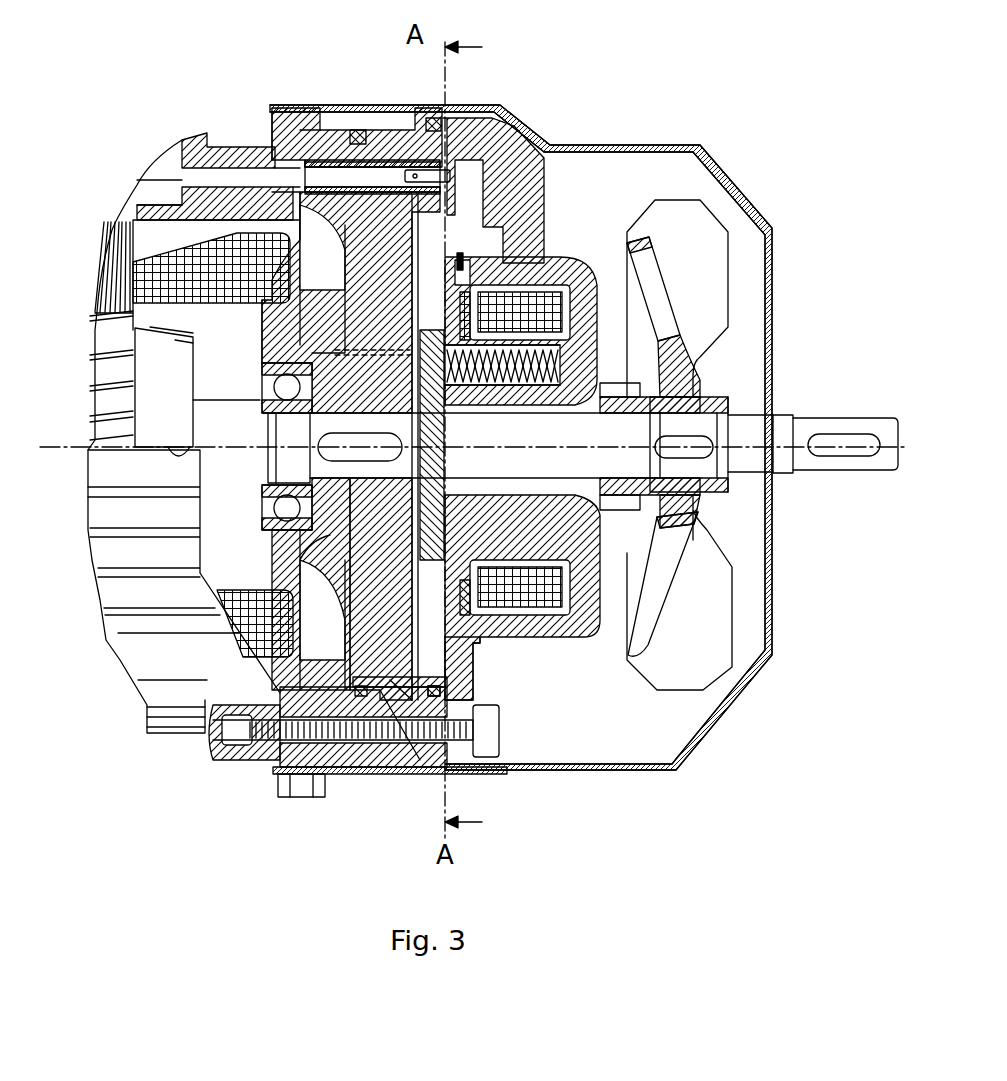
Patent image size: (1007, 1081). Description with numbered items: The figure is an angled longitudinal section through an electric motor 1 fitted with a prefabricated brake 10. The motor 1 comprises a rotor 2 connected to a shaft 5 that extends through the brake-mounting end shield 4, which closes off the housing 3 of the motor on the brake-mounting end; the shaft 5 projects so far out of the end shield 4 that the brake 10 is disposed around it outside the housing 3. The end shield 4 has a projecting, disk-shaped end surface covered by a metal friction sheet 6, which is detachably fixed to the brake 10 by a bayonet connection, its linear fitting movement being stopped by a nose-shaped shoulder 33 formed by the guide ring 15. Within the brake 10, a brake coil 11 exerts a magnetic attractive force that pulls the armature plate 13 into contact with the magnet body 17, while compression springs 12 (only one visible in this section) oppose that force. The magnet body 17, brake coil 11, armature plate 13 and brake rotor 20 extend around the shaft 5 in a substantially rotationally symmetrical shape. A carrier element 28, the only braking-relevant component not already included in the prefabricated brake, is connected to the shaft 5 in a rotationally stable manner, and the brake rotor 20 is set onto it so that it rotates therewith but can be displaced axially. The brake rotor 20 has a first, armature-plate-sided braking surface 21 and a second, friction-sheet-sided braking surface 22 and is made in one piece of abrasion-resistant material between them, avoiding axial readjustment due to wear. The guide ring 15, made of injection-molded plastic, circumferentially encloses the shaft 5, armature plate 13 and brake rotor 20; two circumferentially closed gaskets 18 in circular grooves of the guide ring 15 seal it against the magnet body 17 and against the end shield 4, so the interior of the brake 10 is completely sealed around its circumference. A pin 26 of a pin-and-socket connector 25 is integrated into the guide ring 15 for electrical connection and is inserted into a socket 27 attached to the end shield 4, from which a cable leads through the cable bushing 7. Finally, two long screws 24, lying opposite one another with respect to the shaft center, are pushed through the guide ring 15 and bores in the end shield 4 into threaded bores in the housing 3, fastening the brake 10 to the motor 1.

The electric motor 1 is at (155, 135).
The rotor 2 is at (170, 418).
The housing 3 is at (252, 766).
The brake-mounting end shield 4 is at (290, 700).
The shaft 5 is at (562, 457).
The friction sheet 6 is at (355, 606).
The cable bushing 7 is at (150, 187).
The brake 10 is at (520, 100).
The brake coil 11 is at (548, 275).
The compression springs 12 is at (490, 388).
The armature plate 13 is at (436, 494).
The guide ring 15 is at (420, 762).
The magnet body 17 is at (562, 633).
The gaskets 18 is at (355, 132).
The brake rotor 20 is at (370, 622).
The first braking surface 21 is at (470, 652).
The second braking surface 22 is at (470, 688).
The long screws 24 is at (390, 762).
The pin-and-socket connector 25 is at (330, 165).
The pin 26 is at (380, 160).
The socket 27 is at (305, 120).
The carrier element 28 is at (312, 368).
The shoulder 33 is at (395, 678).